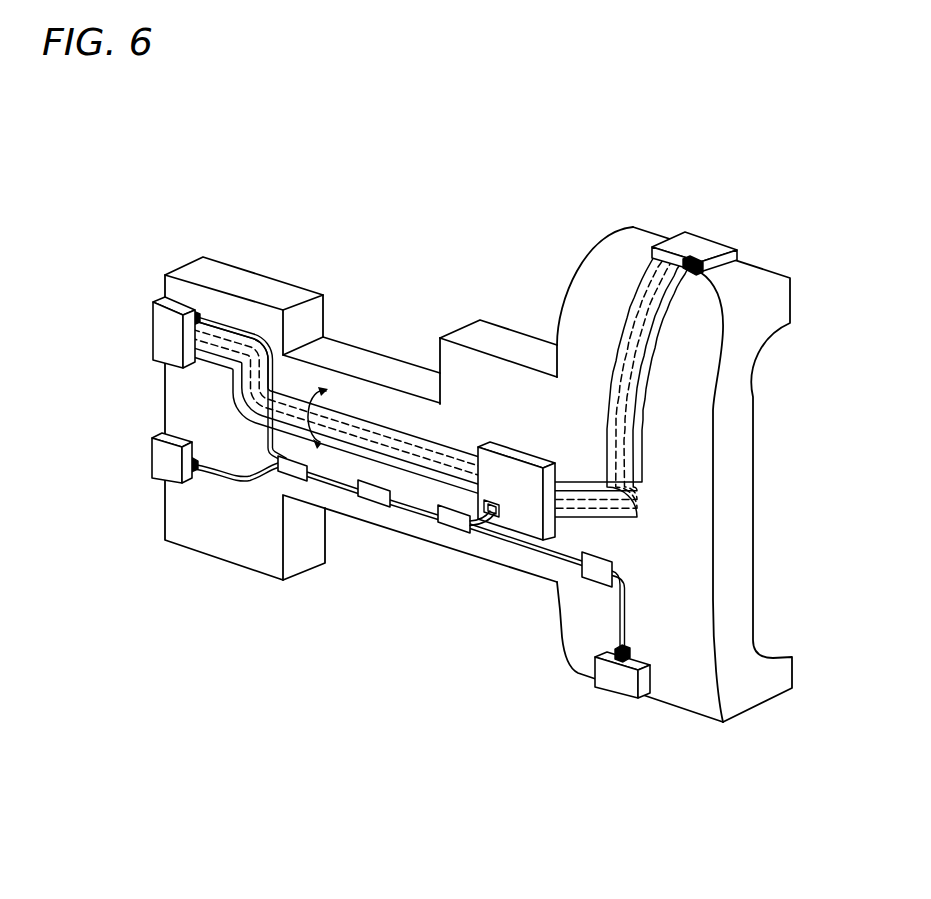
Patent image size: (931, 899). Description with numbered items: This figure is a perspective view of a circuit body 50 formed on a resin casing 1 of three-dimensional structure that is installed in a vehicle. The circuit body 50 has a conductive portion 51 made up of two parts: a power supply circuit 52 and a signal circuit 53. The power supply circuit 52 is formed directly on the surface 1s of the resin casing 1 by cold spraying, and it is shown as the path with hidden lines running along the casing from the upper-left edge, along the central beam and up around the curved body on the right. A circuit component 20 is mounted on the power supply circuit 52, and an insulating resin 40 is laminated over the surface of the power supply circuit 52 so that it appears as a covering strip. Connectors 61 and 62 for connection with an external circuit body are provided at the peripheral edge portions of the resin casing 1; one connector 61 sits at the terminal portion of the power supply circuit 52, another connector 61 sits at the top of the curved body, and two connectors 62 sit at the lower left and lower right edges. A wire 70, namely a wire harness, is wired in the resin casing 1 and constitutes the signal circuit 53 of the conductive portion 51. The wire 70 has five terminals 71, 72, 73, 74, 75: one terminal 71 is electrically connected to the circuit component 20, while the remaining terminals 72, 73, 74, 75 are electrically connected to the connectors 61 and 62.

The resin casing 1 is at (514, 348).
The surface of the resin casing 1s is at (462, 370).
The circuit component 20 is at (532, 522).
The insulating resin 40 is at (404, 432).
The circuit body 50 is at (662, 481).
The conductive portion 51 is at (432, 379).
The power supply circuit 52 is at (321, 396).
The signal circuit 53 is at (451, 552).
The connector 61 is at (165, 339).
The connector 62 is at (167, 458).
The wire 70 is at (412, 508).
The terminal 71 is at (492, 520).
The terminal 72 is at (192, 314).
The terminal 73 is at (190, 472).
The terminal 74 is at (633, 652).
The terminal 75 is at (690, 268).